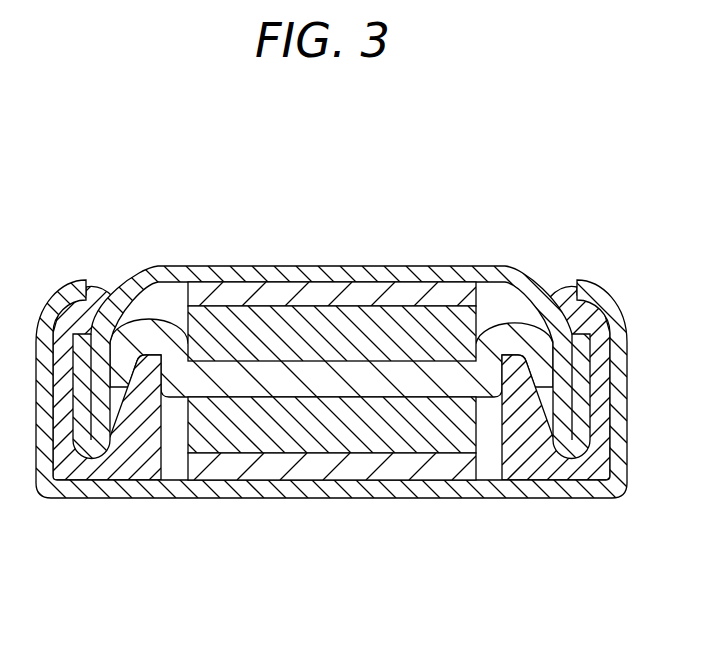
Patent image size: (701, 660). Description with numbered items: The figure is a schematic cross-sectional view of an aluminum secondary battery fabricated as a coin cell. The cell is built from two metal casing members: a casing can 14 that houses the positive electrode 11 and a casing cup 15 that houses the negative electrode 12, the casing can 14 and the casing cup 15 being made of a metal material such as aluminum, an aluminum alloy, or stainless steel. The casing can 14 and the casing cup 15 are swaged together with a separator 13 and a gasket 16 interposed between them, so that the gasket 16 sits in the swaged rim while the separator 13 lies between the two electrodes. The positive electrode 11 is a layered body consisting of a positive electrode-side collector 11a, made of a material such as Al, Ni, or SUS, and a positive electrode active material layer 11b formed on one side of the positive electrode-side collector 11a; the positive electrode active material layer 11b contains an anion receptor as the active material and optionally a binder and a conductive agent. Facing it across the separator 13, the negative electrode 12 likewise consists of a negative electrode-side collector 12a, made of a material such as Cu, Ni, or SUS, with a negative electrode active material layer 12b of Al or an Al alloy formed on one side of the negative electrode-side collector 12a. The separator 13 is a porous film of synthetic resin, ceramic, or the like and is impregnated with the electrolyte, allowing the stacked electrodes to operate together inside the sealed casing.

The positive electrode 11 is at (332, 515).
The positive electrode-side collector 11a is at (453, 553).
The positive electrode active material layer 11b is at (423, 445).
The negative electrode 12 is at (332, 249).
The negative electrode-side collector 12a is at (292, 290).
The negative electrode active material layer 12b is at (278, 217).
The separator 13 is at (533, 342).
The casing can 14 is at (228, 483).
The casing cup 15 is at (185, 275).
The gasket 16 is at (128, 468).